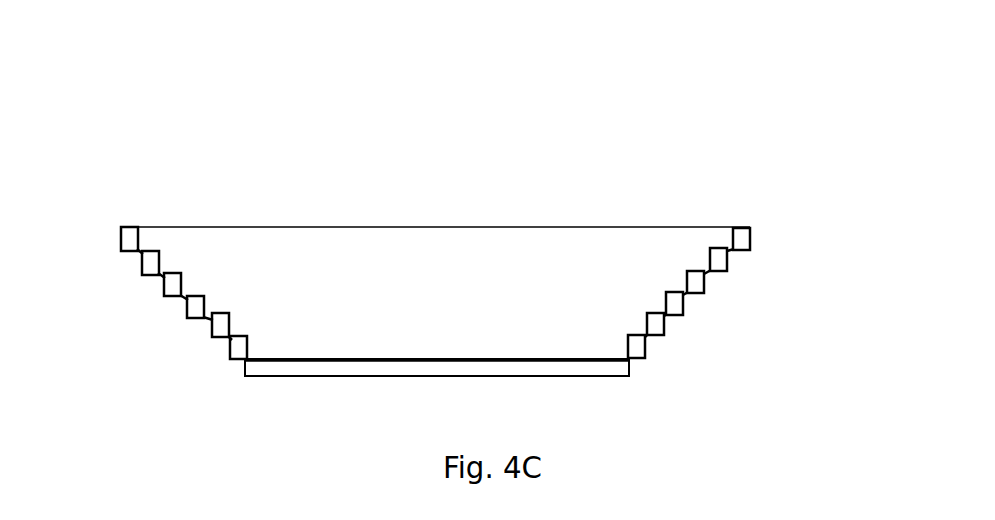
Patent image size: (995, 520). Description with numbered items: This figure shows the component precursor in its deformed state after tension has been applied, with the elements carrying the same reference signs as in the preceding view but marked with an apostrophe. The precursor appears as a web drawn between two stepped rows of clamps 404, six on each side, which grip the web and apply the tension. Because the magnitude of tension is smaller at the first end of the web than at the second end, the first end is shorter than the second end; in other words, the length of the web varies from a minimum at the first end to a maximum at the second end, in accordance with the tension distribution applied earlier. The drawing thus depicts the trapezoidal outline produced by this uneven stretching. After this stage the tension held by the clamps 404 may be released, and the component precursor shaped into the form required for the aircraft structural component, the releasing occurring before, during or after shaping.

The clamps 404 is at (139, 241).